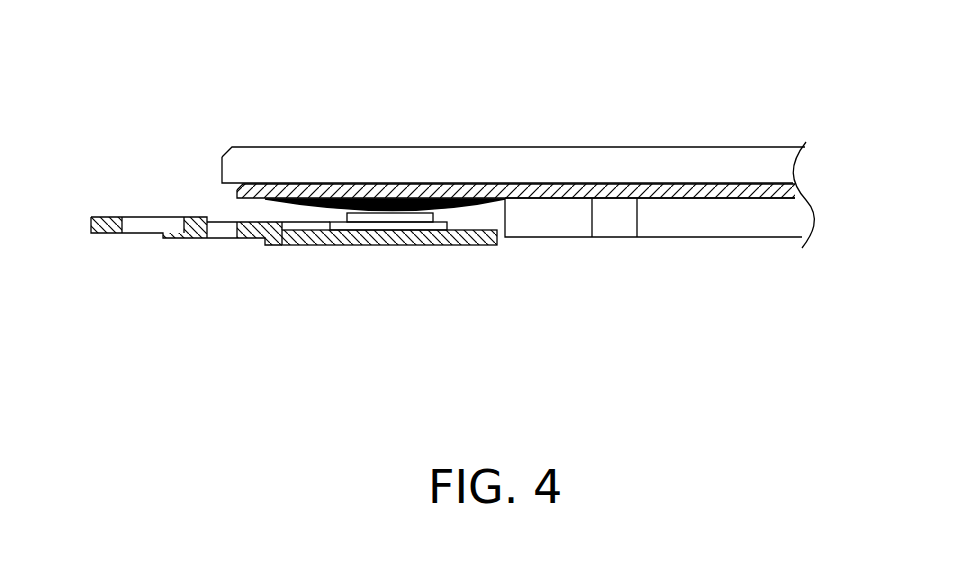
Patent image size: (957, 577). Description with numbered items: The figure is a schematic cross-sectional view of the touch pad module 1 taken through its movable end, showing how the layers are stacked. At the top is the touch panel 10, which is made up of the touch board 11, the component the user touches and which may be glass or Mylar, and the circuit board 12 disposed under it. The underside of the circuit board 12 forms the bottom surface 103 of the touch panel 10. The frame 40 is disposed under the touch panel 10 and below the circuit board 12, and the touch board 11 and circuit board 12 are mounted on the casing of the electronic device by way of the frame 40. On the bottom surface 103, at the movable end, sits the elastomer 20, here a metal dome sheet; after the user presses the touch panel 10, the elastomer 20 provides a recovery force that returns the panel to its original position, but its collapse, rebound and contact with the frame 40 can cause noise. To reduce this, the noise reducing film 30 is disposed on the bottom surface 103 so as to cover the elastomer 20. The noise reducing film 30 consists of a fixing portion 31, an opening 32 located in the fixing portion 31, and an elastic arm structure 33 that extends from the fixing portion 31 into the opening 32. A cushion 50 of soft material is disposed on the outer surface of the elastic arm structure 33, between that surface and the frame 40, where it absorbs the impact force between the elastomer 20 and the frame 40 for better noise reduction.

The touch pad module 1 is at (157, 116).
The touch panel 10 is at (247, 140).
The touch board 11 is at (227, 161).
The circuit board 12 is at (237, 192).
The bottom surface 103 is at (786, 199).
The elastomer 20 is at (428, 208).
The noise reducing film 30 is at (555, 280).
The fixing portion 31 is at (507, 199).
The opening 32 is at (471, 236).
The elastic arm structure 33 is at (412, 222).
The frame 40 is at (287, 246).
The cushion 50 is at (373, 231).